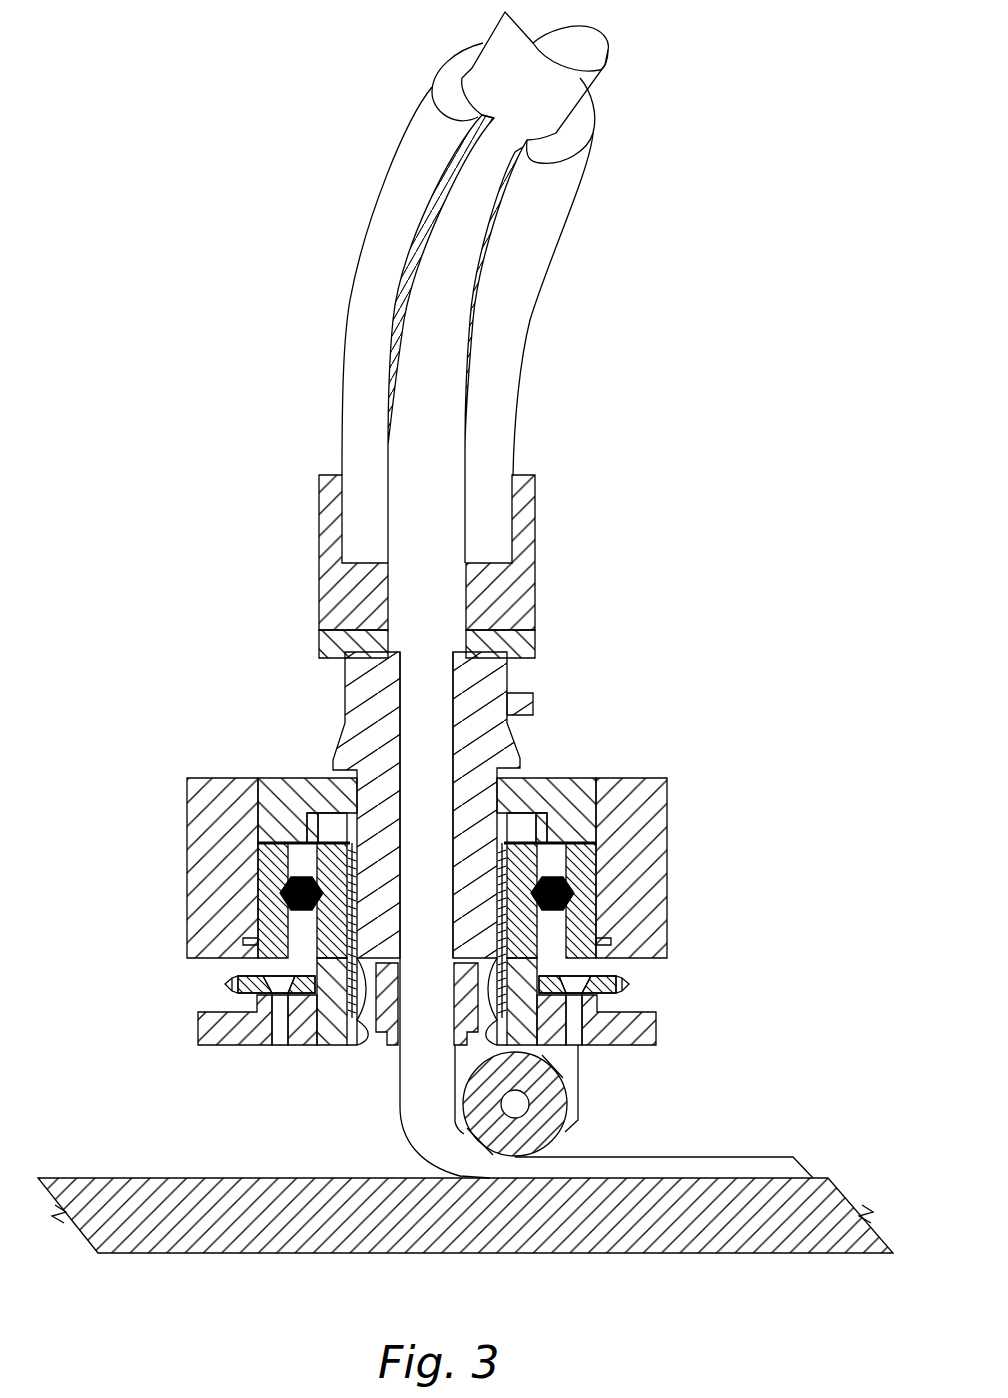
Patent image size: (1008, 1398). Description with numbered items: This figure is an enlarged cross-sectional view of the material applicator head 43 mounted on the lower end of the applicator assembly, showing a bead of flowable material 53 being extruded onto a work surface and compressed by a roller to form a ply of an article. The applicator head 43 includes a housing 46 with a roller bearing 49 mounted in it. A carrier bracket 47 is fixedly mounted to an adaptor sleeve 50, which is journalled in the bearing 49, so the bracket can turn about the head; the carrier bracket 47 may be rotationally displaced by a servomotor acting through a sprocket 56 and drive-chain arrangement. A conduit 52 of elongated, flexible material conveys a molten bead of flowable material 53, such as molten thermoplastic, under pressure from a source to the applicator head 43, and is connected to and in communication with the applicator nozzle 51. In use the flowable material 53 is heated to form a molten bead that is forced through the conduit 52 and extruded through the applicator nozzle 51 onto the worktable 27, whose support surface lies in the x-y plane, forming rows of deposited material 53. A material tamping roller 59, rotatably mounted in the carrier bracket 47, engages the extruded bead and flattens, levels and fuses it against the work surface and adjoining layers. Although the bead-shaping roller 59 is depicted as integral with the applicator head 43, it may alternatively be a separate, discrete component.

The worktable 27 is at (120, 1178).
The applicator head 43 is at (466, 868).
The housing 46 is at (187, 860).
The carrier bracket 47 is at (389, 1022).
The roller bearing 49 is at (605, 862).
The adaptor sleeve 50 is at (383, 1024).
The applicator nozzle 51 is at (347, 725).
The conduit 52 is at (537, 252).
The flowable material 53 is at (492, 64).
The sprocket 56 is at (635, 982).
The material tamping roller 59 is at (566, 1130).